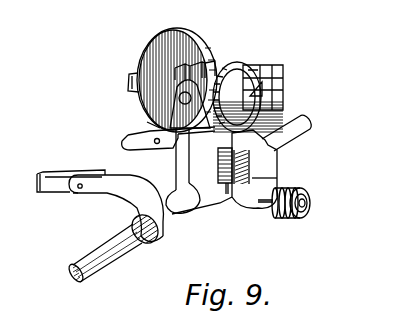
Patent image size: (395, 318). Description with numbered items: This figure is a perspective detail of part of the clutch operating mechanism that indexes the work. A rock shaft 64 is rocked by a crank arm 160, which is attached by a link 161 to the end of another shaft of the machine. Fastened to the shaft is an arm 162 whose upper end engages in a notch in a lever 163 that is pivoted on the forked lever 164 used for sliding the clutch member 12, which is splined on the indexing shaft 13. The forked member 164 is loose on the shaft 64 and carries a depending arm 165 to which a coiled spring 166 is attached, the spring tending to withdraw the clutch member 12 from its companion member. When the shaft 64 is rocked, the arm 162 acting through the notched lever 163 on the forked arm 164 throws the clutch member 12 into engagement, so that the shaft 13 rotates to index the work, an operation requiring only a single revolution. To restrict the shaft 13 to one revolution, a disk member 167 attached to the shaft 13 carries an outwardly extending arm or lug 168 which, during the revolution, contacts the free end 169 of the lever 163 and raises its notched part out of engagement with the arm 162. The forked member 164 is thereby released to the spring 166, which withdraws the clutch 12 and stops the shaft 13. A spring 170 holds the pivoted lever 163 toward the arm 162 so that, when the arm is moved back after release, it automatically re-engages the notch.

The clutch member 12 is at (248, 70).
The indexing shaft 13 is at (268, 90).
The rock shaft 64 is at (88, 273).
The crank arm 160 is at (138, 198).
The link 161 is at (64, 196).
The arm 162 is at (180, 166).
The lever 163 is at (147, 122).
The forked lever 164 is at (255, 152).
The depending arm 165 is at (265, 177).
The coiled spring 166 is at (310, 198).
The disk member 167 is at (205, 37).
The arm or lug 168 is at (137, 75).
The free end 169 is at (137, 137).
The spring 170 is at (231, 185).